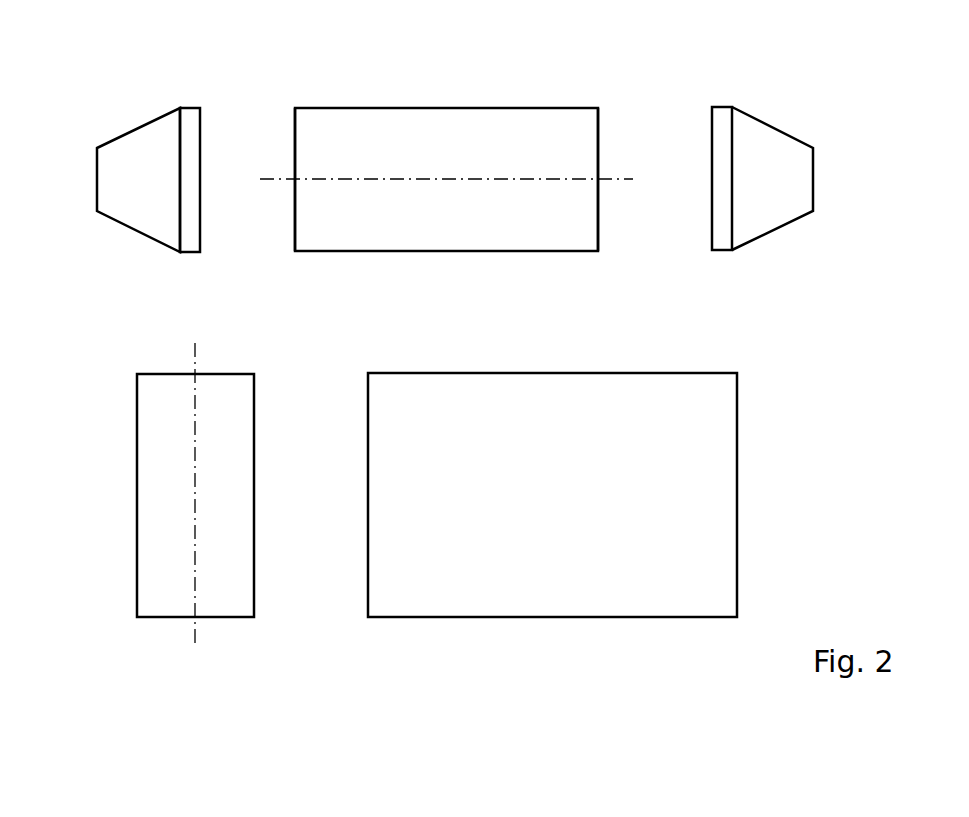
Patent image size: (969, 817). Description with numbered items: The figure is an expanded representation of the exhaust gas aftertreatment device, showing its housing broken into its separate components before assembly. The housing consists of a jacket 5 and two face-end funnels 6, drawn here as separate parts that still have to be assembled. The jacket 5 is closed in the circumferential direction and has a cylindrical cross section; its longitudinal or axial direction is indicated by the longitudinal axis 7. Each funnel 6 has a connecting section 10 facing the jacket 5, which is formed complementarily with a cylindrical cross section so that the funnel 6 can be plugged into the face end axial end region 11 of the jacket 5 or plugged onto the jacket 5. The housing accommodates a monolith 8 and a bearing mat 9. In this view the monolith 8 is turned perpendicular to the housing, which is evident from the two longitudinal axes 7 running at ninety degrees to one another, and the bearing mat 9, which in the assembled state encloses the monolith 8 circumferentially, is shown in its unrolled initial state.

The jacket 5 is at (447, 106).
The face-end funnel 6 is at (140, 126).
The longitudinal axis 7 is at (466, 182).
The monolith 8 is at (136, 493).
The bearing mat 9 is at (720, 488).
The connecting section 10 is at (191, 120).
The face end axial end region 11 is at (305, 120).